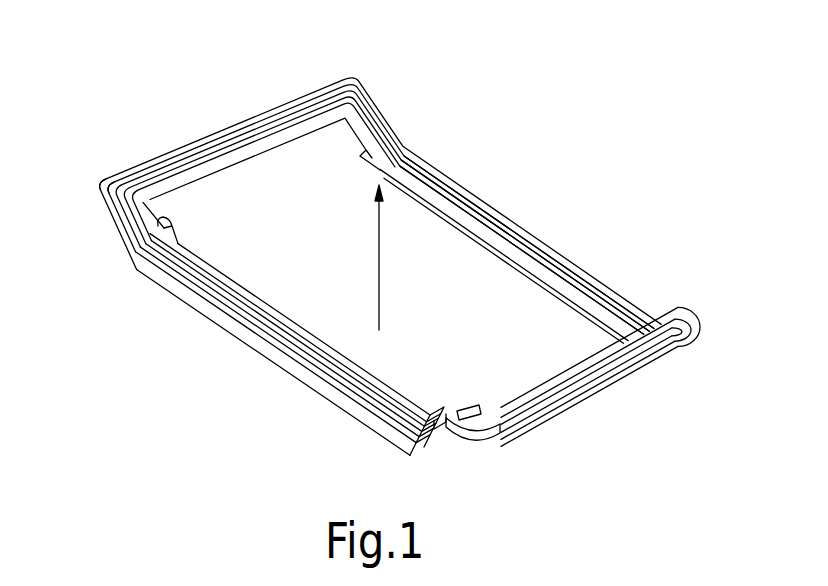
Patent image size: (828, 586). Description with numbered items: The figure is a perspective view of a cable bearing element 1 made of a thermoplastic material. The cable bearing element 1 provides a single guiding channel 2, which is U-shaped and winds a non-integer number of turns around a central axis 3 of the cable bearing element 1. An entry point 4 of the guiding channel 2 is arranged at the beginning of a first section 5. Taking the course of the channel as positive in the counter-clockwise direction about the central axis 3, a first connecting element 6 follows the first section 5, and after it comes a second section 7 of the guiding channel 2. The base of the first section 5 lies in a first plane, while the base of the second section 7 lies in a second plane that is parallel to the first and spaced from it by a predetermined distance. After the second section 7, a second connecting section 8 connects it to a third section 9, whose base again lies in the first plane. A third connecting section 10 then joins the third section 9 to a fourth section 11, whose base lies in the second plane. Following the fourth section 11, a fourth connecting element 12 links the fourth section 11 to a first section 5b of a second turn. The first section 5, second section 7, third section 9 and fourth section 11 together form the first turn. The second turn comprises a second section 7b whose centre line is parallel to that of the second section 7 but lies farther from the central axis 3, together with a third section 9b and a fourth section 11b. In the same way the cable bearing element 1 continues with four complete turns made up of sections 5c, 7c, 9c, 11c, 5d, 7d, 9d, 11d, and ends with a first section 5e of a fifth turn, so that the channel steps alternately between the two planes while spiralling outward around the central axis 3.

The cable bearing element 1 is at (186, 404).
The guiding channel 2 is at (408, 411).
The central axis 3 is at (379, 262).
The entry point 4 is at (167, 240).
The first section 5 is at (293, 330).
The first section of a second turn 5b is at (265, 320).
The first section of a third turn 5c is at (187, 283).
The first section of a fourth turn 5d is at (262, 337).
The first section of a fifth turn 5e is at (347, 400).
The first connecting element 6 is at (468, 443).
The second section 7 is at (535, 392).
The second section of the second turn 7b is at (545, 396).
The second section of a third turn 7c is at (572, 390).
The second section of a fourth turn 7d is at (617, 376).
The second connecting section 8 is at (702, 314).
The third section 9 is at (545, 272).
The third section of the second turn 9b is at (543, 258).
The third section of a third turn 9c is at (521, 239).
The third section of a fourth turn 9d is at (482, 205).
The third connecting section 10 is at (355, 82).
The fourth section 11 is at (266, 140).
The fourth section of the second turn 11b is at (252, 135).
The fourth section of a third turn 11c is at (270, 118).
The fourth section of a fourth turn 11d is at (307, 95).
The fourth connecting element 12 is at (106, 203).